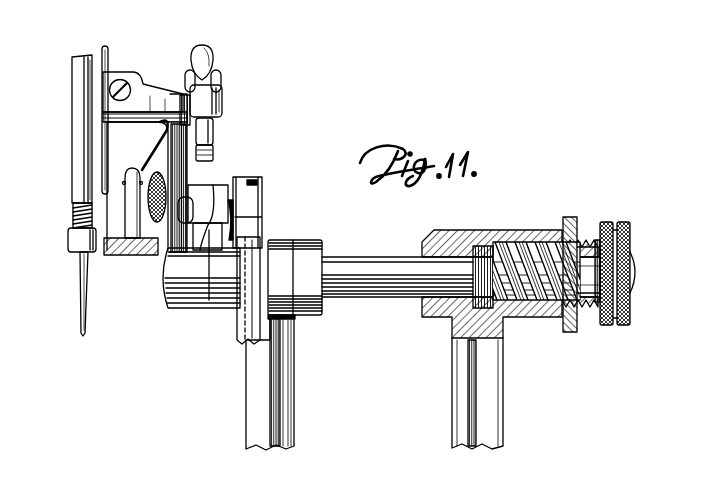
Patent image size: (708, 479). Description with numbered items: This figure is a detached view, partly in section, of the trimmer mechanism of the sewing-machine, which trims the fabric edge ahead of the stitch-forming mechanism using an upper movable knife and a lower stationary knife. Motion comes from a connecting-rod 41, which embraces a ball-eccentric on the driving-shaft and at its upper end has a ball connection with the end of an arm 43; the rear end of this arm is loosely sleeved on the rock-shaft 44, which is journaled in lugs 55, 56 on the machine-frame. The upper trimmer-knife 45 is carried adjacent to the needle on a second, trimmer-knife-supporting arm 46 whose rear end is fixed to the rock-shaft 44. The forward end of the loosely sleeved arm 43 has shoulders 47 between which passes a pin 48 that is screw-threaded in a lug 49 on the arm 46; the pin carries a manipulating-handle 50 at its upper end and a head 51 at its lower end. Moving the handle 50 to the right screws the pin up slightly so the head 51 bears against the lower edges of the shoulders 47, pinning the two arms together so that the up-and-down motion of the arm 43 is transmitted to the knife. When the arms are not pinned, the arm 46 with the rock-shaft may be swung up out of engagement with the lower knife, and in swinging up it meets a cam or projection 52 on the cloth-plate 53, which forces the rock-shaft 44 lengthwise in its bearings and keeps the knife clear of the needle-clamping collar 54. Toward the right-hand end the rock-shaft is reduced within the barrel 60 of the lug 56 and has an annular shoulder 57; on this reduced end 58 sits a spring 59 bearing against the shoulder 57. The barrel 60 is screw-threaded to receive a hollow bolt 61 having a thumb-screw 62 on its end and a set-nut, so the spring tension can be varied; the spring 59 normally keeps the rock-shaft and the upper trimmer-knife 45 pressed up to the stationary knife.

The connecting-rod 41 is at (238, 331).
The arm 43 is at (208, 235).
The rock-shaft 44 is at (162, 290).
The upper trimmer-knife 45 is at (103, 142).
The trimmer-knife-supporting arm 46 is at (144, 84).
The shoulders 47 is at (213, 185).
The pin 48 is at (216, 137).
The lug 49 is at (222, 97).
The manipulating-handle 50 is at (208, 50).
The head 51 is at (214, 158).
The cam or projection 52 is at (158, 133).
The cloth-plate 53 is at (116, 237).
The needle-clamping collar 54 is at (68, 243).
The lug 55 is at (312, 240).
The lug 56 is at (445, 230).
The annular shoulder 57 is at (486, 246).
The reduced end 58 is at (590, 246).
The spring 59 is at (556, 320).
The barrel 60 is at (525, 243).
The hollow bolt 61 is at (592, 310).
The thumb-screw 62 is at (637, 273).